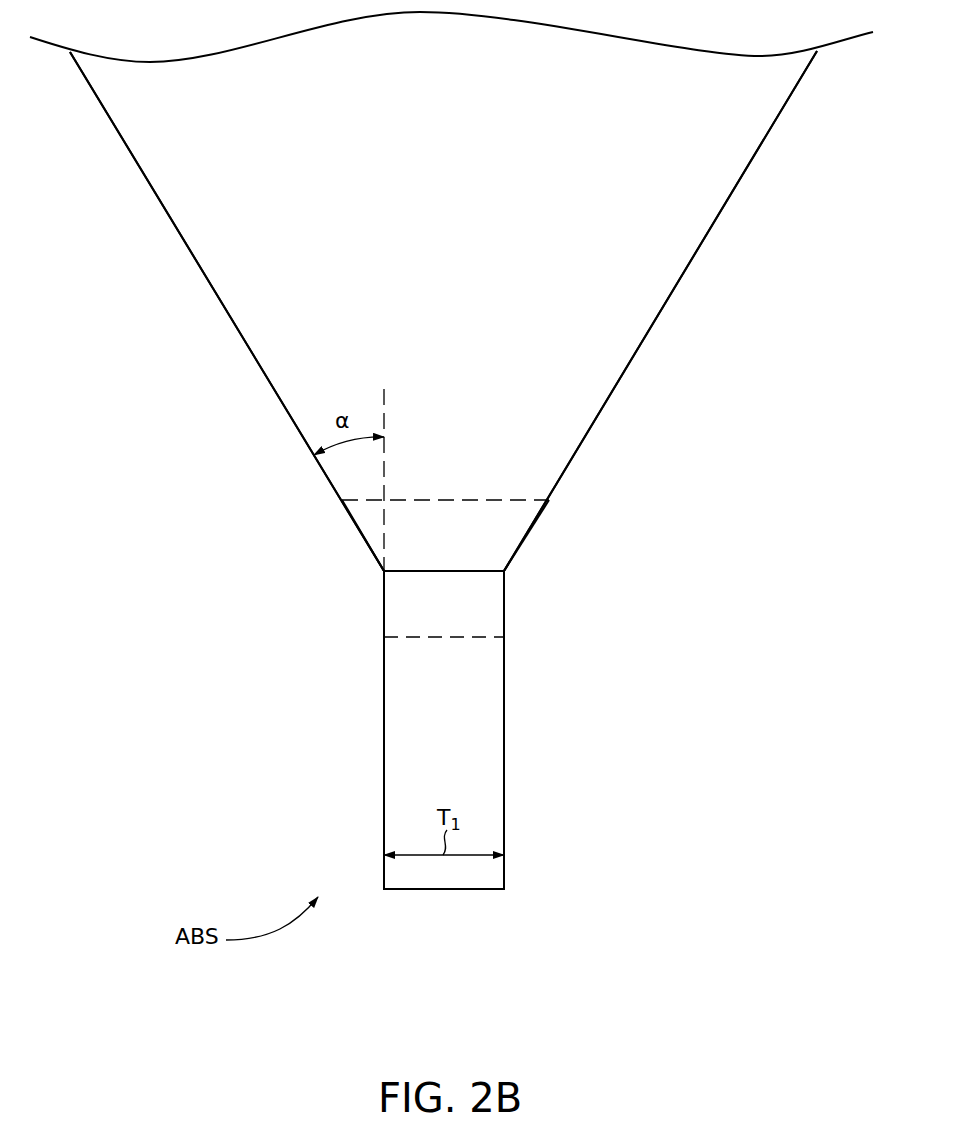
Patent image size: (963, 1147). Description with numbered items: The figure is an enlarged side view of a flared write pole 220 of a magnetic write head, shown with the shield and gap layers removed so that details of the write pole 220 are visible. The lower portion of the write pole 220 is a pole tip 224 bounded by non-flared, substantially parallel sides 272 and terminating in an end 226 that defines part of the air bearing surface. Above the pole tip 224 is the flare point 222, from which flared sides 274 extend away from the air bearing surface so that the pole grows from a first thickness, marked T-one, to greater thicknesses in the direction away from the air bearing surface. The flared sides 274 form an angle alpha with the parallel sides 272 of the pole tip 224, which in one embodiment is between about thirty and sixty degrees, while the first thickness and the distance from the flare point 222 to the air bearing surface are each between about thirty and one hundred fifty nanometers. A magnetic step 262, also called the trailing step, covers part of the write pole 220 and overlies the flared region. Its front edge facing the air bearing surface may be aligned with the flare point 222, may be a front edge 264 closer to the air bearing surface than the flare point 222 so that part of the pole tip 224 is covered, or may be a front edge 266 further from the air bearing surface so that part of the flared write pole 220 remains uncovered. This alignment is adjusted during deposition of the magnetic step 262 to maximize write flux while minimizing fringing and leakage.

The magnetic step 262 is at (457, 312).
The flared sides 274 is at (251, 350).
The front edge 266 is at (513, 500).
The write pole 220 is at (472, 538).
The flare point 222 is at (455, 573).
The front edge 264 is at (455, 639).
The pole tip 224 is at (465, 721).
The non-flared sides 272 is at (384, 780).
The end 226 is at (460, 889).